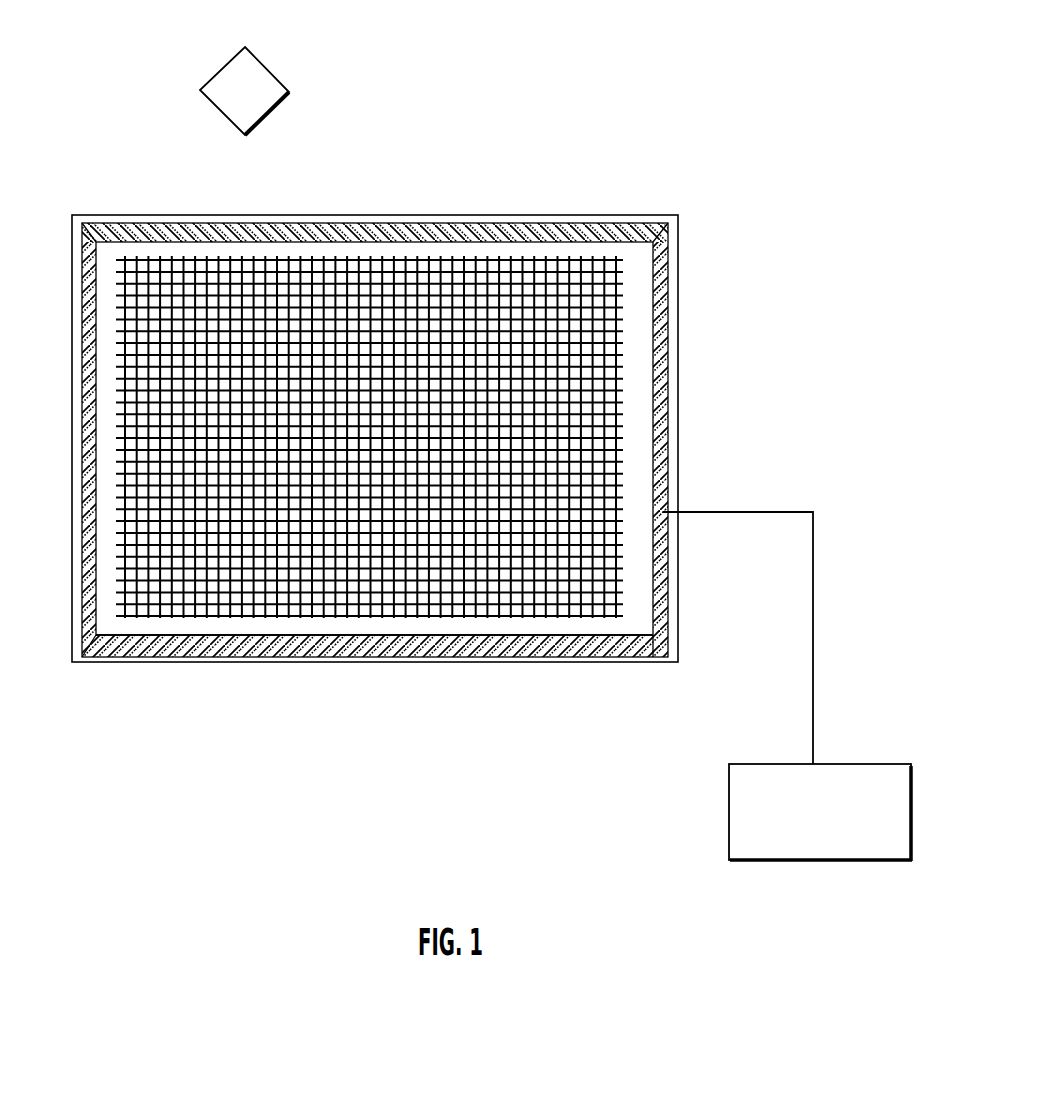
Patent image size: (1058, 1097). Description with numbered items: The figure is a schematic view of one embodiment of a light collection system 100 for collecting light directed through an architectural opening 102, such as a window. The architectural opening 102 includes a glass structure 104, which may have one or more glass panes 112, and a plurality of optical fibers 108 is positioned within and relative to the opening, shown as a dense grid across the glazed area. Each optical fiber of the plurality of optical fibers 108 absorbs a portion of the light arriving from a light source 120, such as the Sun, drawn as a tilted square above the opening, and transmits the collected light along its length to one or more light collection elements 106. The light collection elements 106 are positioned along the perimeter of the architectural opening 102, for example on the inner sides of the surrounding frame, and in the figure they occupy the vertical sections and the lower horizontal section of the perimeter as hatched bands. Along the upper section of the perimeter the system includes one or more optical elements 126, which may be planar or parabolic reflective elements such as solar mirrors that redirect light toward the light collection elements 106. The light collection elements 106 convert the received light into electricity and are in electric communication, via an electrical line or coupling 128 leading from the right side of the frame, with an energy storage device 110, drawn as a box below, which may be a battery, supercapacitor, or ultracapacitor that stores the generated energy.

The light collection system 100 is at (797, 108).
The architectural opening 102 is at (117, 202).
The glass structure 104 is at (202, 630).
The light collection element 106 is at (87, 395).
The plurality of optical fibers 108 is at (395, 280).
The energy storage device 110 is at (862, 775).
The glass pane 112 is at (285, 625).
The light source 120 is at (257, 72).
The optical element 126 is at (562, 228).
The electrical line or coupling 128 is at (815, 560).